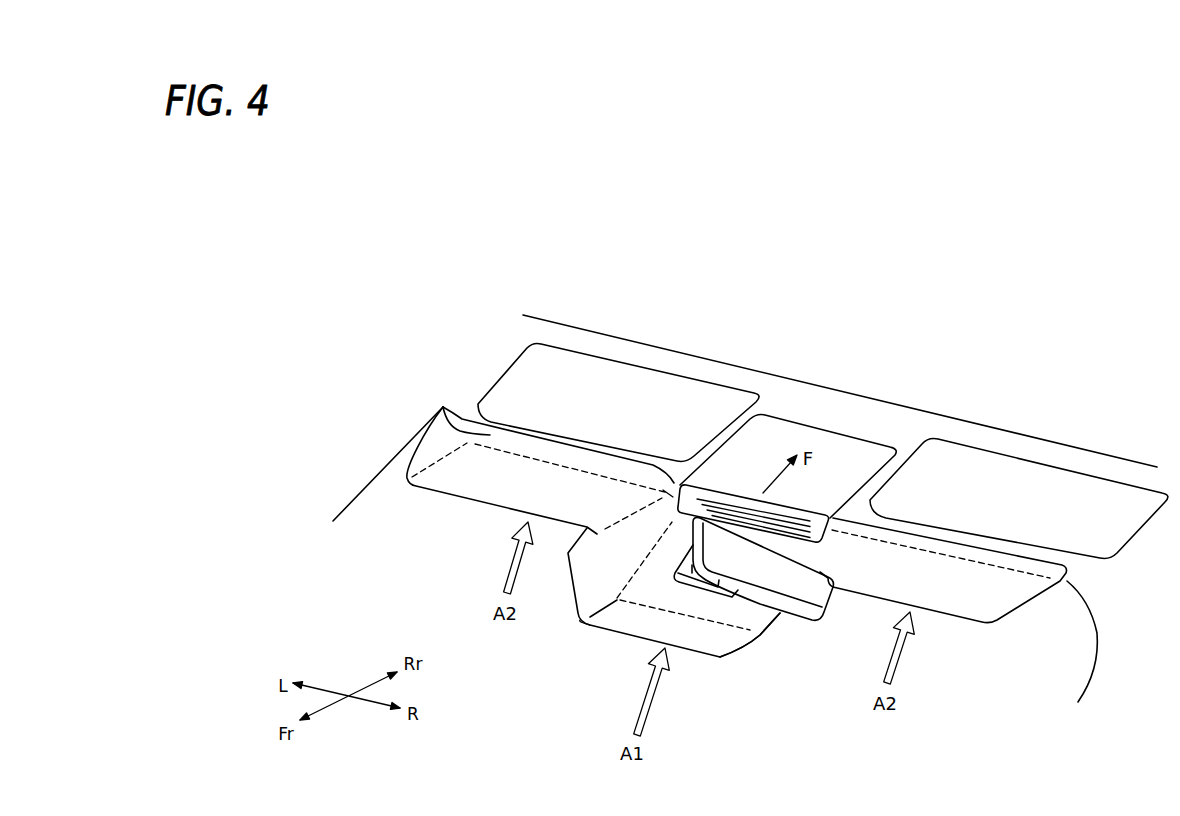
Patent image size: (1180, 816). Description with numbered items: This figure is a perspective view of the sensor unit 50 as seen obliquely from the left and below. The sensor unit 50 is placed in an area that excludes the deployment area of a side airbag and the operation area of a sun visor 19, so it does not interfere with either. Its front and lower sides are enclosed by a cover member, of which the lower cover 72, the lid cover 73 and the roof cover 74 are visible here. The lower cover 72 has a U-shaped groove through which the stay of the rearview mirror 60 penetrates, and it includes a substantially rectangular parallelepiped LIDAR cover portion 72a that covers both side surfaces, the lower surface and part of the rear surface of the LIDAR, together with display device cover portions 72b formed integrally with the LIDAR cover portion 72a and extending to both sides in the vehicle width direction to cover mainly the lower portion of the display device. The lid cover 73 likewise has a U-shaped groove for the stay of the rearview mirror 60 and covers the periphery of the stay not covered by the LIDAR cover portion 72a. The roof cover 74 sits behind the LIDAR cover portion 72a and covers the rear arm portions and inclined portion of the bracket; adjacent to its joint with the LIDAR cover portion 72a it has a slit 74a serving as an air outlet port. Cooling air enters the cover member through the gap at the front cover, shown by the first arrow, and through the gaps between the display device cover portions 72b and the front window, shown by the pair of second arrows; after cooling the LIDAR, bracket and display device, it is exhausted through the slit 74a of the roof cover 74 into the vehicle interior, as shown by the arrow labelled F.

The sun visor 19 is at (647, 391).
The sensor unit 50 is at (580, 653).
The rearview mirror 60 is at (807, 600).
The lower cover 72 is at (632, 638).
The LIDAR cover portion 72a is at (745, 612).
The display device cover portion 72b is at (508, 490).
The lid cover 73 is at (692, 575).
The roof cover 74 is at (863, 457).
The slit 74a is at (735, 497).